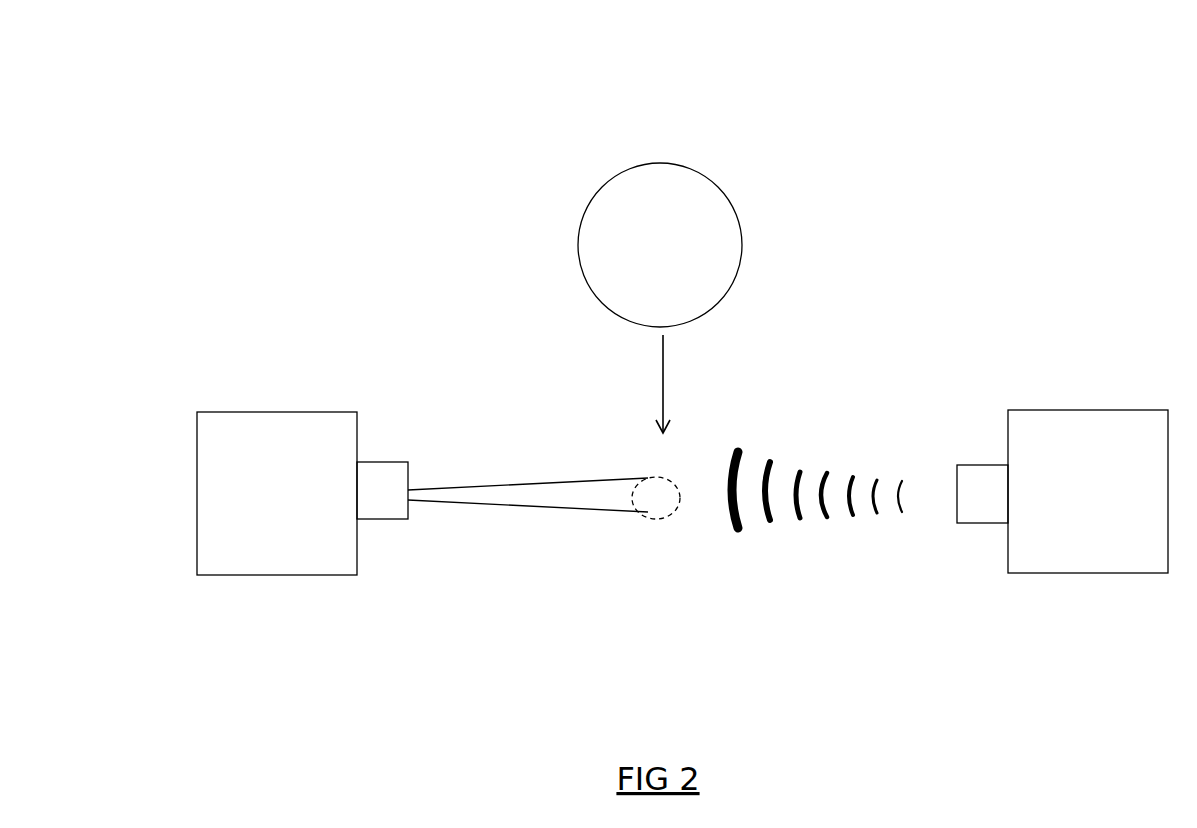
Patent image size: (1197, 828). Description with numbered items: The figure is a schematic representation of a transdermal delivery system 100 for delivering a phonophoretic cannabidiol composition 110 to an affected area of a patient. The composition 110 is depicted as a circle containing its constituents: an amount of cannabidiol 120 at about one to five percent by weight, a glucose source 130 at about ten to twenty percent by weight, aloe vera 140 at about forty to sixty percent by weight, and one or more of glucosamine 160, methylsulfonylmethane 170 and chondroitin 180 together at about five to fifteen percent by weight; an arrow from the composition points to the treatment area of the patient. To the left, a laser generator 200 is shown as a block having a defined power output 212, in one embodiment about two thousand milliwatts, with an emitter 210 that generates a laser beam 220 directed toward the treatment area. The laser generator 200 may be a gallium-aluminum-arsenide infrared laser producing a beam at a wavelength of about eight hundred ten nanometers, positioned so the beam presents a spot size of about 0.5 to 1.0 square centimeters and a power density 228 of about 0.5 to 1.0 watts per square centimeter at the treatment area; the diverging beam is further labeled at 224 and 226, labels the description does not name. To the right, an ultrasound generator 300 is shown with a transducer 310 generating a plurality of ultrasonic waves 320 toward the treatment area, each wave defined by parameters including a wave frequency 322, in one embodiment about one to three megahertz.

The transdermal delivery system 100 is at (292, 140).
The phonophoretic cannabidiol composition 110 is at (751, 225).
The cannabidiol 120 is at (658, 190).
The glucose source 130 is at (615, 230).
The aloe vera 140 is at (698, 230).
The glucosamine 160 is at (617, 271).
The methylsulfonylmethane 170 is at (702, 271).
The chondroitin 180 is at (662, 306).
The laser generator 200 is at (265, 604).
The emitter 210 is at (380, 519).
The power output 212 is at (279, 492).
The laser beam 220 is at (487, 433).
The upper beam edge 224 is at (488, 517).
The lower beam edge 226 is at (633, 505).
The power density 228 is at (658, 483).
The ultrasound generator 300 is at (1083, 603).
The transducer 310 is at (969, 523).
The ultrasonic waves 320 is at (833, 421).
The wave frequency 322 is at (813, 507).